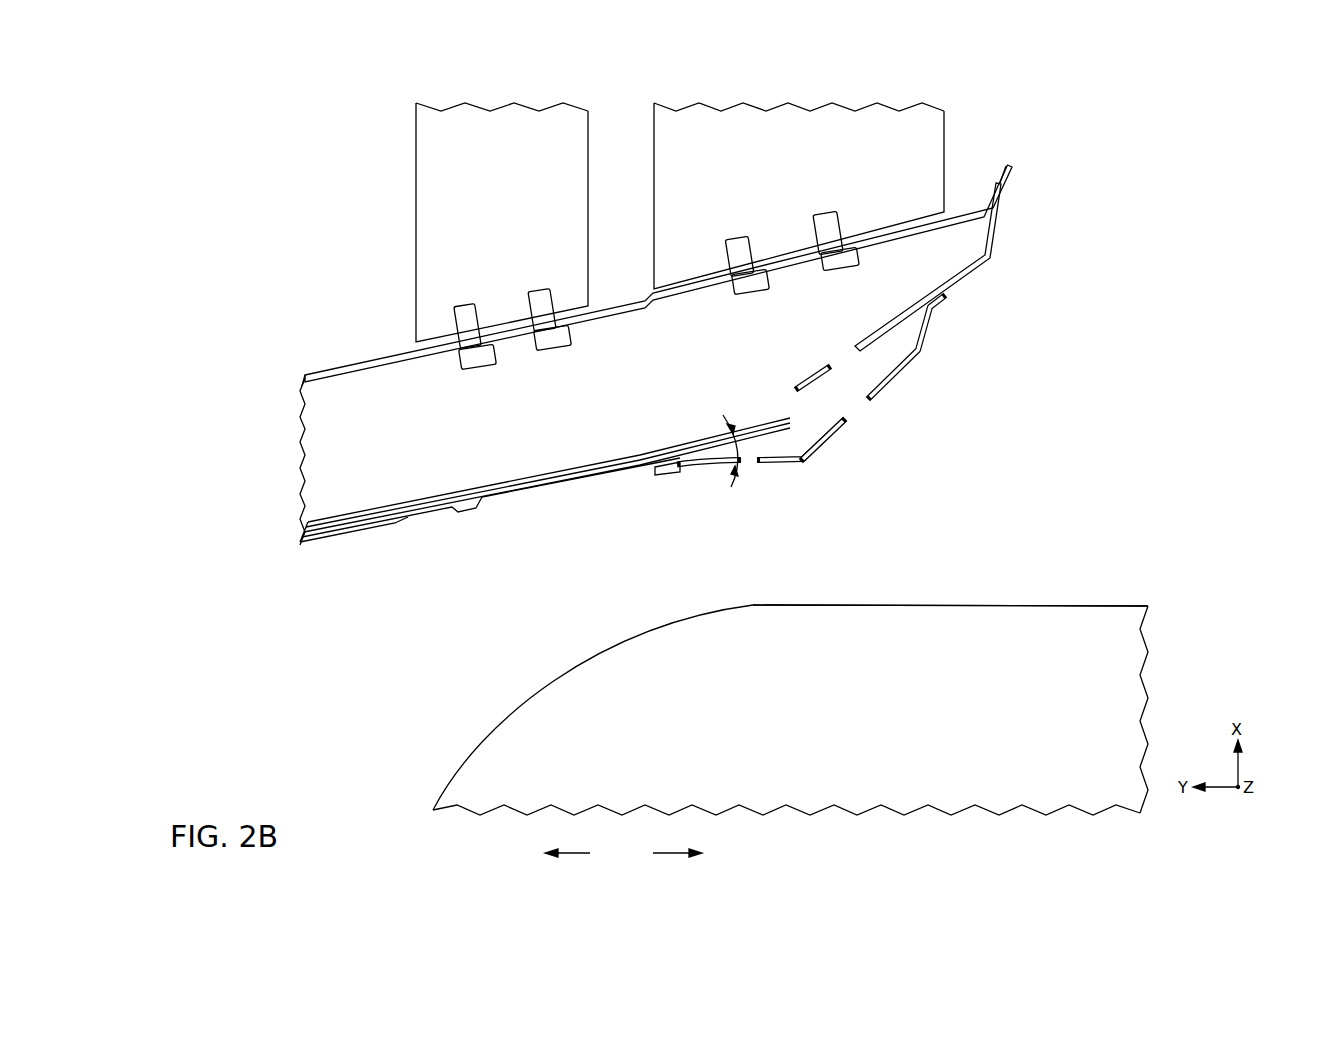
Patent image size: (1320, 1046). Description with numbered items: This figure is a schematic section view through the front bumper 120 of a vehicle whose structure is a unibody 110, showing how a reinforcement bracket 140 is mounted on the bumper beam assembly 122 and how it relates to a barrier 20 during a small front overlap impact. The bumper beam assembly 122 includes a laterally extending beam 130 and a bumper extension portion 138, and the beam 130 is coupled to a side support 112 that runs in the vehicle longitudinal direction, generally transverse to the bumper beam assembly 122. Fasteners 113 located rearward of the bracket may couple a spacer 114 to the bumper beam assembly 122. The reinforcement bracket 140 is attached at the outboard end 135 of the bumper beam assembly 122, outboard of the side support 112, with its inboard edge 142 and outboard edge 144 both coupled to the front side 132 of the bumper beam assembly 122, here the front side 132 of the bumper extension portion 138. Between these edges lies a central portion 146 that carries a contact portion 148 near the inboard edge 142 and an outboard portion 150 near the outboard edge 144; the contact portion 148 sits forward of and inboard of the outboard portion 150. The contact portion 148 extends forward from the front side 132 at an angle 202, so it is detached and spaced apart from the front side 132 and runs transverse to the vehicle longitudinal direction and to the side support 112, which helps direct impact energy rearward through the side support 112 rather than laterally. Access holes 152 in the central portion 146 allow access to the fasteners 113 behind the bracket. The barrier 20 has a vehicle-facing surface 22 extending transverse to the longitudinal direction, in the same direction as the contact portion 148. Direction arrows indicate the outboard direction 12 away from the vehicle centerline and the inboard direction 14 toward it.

The unibody 110 is at (287, 129).
The side support 112 is at (416, 218).
The spacer 114 is at (944, 143).
The fasteners 113 is at (750, 297).
The beam 130 is at (353, 319).
The bumper extension portion 138 is at (1031, 219).
The outboard edge 144 is at (942, 302).
The outboard portion 150 is at (898, 372).
The reinforcement bracket 140 is at (841, 448).
The contact portion 148 is at (789, 468).
The central portion 146 is at (820, 471).
The access holes 152 is at (873, 417).
The front side 132 is at (563, 492).
The inboard edge 142 is at (672, 477).
The angle 202 is at (747, 452).
The bumper 120 is at (438, 571).
The bumper beam assembly 122 is at (482, 561).
The outboard end 135 is at (647, 537).
The barrier 20 is at (790, 665).
The vehicle-facing surface 22 is at (957, 606).
The inboard direction 14 is at (578, 853).
The outboard direction 12 is at (668, 853).